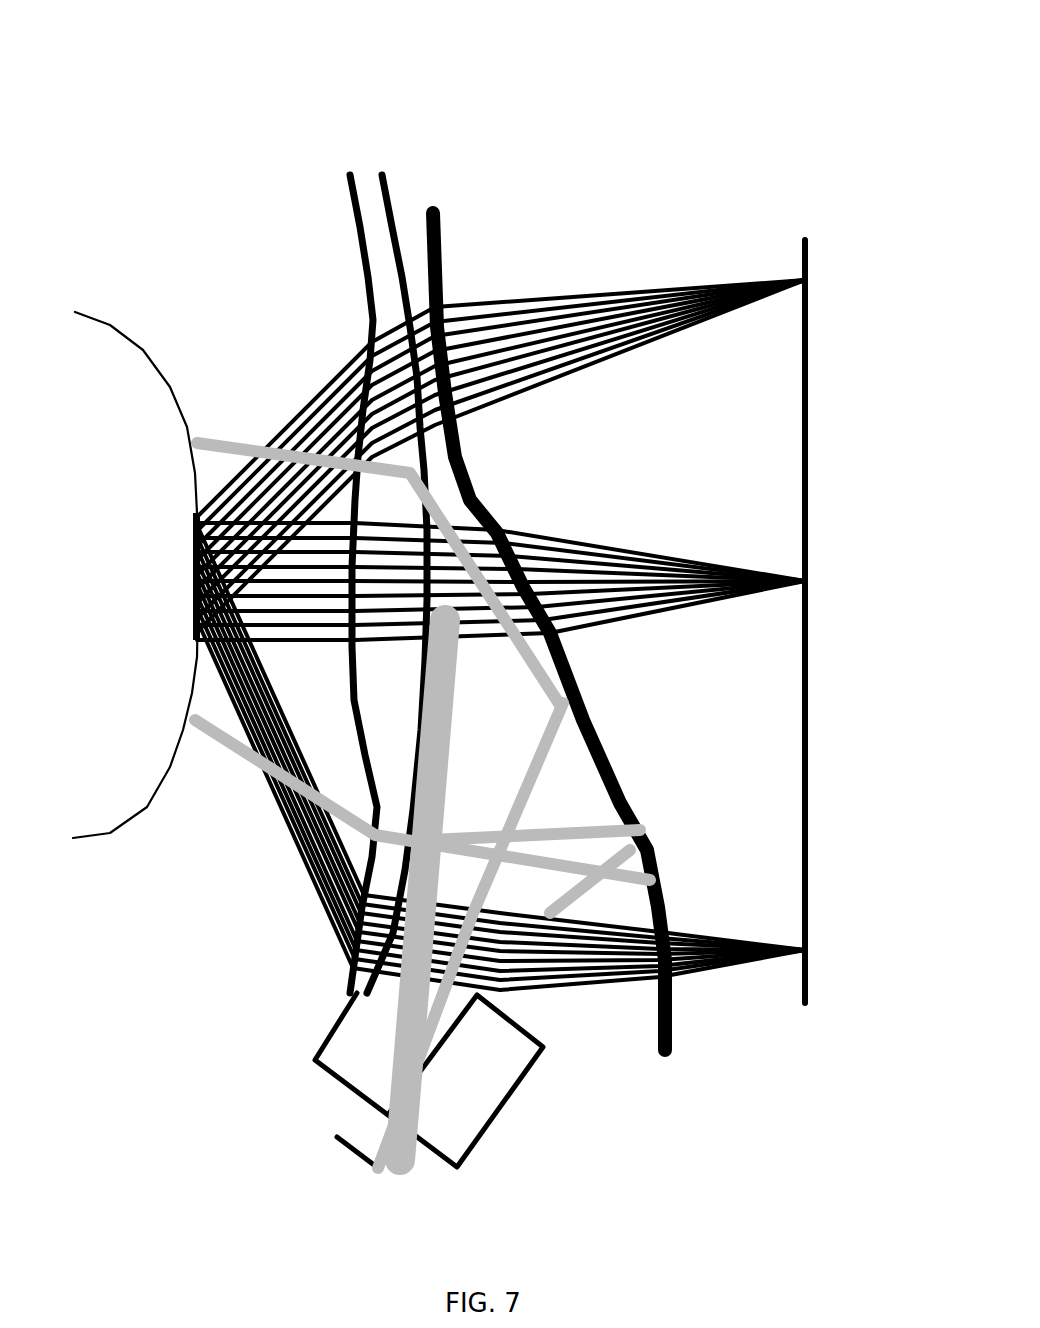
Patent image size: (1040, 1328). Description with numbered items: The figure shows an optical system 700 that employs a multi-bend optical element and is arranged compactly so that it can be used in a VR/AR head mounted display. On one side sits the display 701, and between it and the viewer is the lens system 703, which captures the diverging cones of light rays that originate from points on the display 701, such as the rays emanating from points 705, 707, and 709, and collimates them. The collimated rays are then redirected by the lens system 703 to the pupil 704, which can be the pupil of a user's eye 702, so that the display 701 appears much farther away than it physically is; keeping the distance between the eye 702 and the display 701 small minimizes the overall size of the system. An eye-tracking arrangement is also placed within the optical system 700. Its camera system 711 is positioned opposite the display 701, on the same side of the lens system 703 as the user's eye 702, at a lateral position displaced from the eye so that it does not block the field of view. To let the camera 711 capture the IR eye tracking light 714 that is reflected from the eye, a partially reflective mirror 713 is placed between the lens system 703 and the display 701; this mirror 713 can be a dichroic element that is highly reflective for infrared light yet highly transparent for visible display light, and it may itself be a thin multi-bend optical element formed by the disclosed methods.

The optical system 700 is at (184, 99).
The display 701 is at (843, 416).
The user's eye 702 is at (103, 313).
The lens system 703 is at (338, 243).
The pupil 704 is at (195, 556).
The point on the display 705 is at (810, 266).
The point on the display 707 is at (810, 575).
The point on the display 709 is at (810, 947).
The camera system 711 is at (544, 1127).
The partially reflective mirror 713 is at (443, 232).
The IR eye tracking light 714 is at (211, 429).